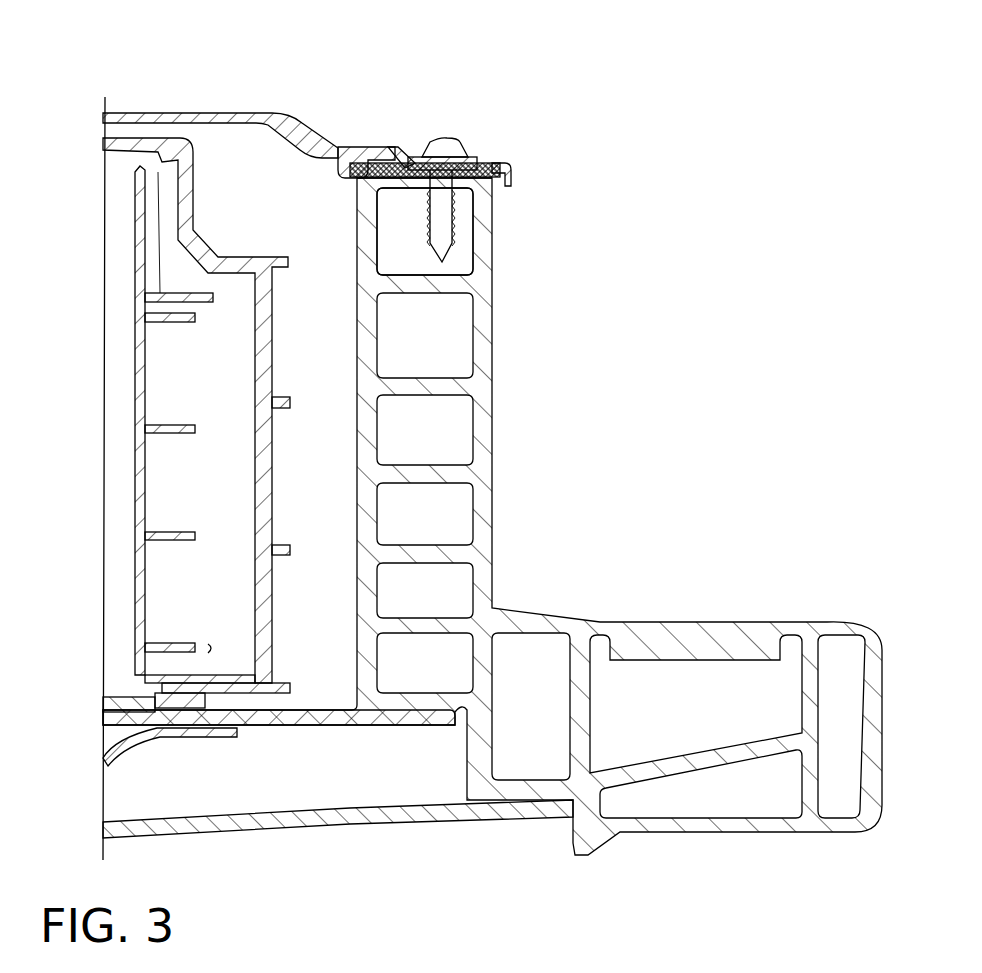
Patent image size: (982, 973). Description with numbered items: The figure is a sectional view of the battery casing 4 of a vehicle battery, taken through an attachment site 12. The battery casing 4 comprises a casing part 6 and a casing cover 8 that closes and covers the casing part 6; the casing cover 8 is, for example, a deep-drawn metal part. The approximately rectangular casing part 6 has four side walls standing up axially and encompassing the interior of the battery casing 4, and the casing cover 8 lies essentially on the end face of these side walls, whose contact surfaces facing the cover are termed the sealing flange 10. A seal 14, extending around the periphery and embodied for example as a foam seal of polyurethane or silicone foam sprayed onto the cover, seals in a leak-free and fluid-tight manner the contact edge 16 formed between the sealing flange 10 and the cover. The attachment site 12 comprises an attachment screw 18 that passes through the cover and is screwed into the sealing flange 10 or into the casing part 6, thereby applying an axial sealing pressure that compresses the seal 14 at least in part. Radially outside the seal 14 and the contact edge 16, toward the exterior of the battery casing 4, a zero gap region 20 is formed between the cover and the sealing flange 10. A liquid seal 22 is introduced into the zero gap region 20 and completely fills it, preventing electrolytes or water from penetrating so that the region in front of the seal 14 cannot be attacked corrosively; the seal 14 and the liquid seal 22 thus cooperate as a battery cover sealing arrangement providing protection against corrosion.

The battery casing 4 is at (600, 50).
The casing part 6 is at (482, 385).
The casing cover 8 is at (248, 118).
The sealing flange 10 is at (483, 205).
The attachment site 12 is at (431, 100).
The seal 14 is at (352, 162).
The contact edge 16 is at (380, 172).
The attachment screw 18 is at (444, 240).
The zero gap region 20 is at (500, 139).
The liquid seal 22 is at (483, 168).